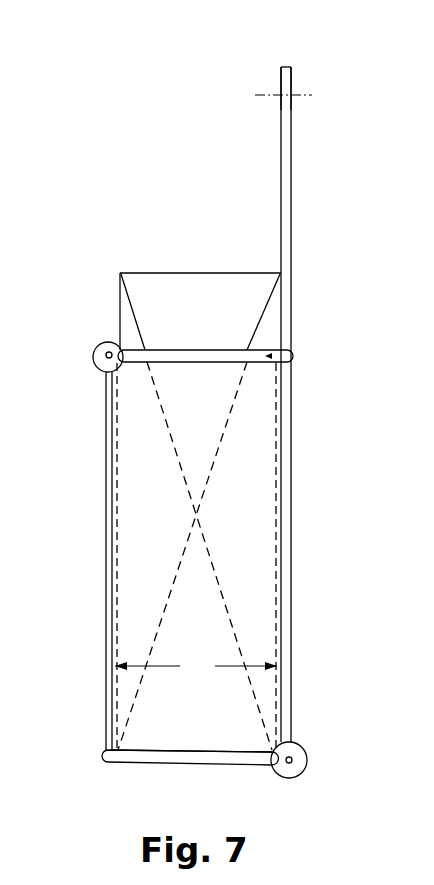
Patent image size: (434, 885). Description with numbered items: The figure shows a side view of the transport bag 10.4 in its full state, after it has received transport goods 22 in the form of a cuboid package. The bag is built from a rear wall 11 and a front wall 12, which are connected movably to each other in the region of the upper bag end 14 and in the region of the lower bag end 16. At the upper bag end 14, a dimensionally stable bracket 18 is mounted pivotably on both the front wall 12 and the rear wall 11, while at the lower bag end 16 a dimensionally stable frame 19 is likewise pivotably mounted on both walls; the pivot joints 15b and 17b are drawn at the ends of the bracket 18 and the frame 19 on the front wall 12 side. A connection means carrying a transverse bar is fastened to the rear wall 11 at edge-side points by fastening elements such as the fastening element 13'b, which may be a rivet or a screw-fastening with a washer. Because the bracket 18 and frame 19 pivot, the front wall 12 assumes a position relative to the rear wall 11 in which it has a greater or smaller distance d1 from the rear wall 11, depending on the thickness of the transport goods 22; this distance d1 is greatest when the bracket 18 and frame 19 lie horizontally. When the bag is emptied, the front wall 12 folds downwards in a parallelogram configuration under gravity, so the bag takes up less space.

The transport bag 10.4 is at (318, 458).
The rear wall 11 is at (288, 523).
The front wall 12 is at (108, 588).
The fastening element 13'b is at (323, 66).
The upper bag end 14 is at (172, 338).
The upper pivot joint 15b is at (105, 363).
The lower bag end 16 is at (190, 779).
The lower pivot joint 17b is at (292, 751).
The bracket 18 is at (293, 358).
The frame 19 is at (142, 757).
The transport goods 22 is at (184, 301).
The distance d1 is at (196, 666).